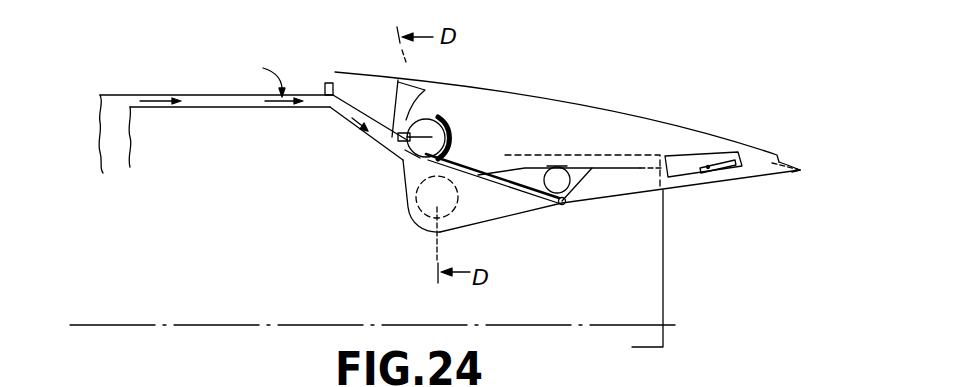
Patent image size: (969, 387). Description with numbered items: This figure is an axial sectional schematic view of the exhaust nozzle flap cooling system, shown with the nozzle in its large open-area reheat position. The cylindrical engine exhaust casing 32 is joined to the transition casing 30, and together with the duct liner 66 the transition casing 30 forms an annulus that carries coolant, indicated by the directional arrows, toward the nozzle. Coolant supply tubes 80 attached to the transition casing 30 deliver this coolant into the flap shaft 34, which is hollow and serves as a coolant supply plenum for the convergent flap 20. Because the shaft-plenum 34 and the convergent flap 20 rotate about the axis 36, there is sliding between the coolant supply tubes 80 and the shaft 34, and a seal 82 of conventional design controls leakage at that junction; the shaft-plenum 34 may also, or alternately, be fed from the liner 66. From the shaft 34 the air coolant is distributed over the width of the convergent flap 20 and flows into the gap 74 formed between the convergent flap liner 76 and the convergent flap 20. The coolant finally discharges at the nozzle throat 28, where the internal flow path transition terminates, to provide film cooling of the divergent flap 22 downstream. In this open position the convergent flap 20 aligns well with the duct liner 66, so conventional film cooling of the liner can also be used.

The convergent flap 20 is at (507, 173).
The divergent flap 22 is at (749, 182).
The nozzle throat 28 is at (582, 207).
The transition casing 30 is at (343, 118).
The exhaust casing 32 is at (206, 73).
The flap shaft 34 is at (510, 137).
The axis 36 is at (443, 212).
The duct liner 66 is at (358, 124).
The gap 74 is at (417, 178).
The convergent flap liner 76 is at (477, 212).
The coolant supply tube 80 is at (417, 130).
The seal 82 is at (403, 163).